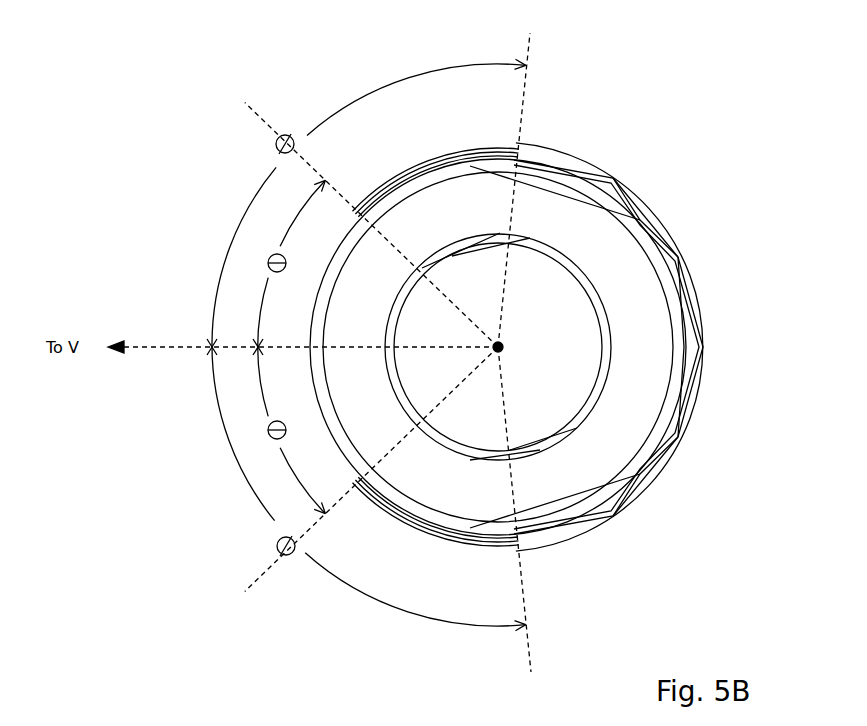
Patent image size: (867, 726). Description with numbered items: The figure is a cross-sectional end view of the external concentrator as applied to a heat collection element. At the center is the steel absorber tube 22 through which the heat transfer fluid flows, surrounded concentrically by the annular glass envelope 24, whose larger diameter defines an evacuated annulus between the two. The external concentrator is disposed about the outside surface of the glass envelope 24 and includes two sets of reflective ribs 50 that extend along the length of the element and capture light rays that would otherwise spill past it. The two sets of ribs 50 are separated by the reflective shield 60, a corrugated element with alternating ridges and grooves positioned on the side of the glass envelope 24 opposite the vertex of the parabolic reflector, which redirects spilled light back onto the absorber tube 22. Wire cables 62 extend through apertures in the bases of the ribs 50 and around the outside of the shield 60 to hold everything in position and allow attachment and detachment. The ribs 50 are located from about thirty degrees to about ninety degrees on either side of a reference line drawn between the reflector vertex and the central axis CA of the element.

The absorber tube 22 is at (607, 322).
The glass envelope 24 is at (680, 257).
The reflective ribs 50 is at (481, 134).
The reflective shield 60 is at (702, 362).
The wire cables 62 is at (573, 160).
The central axis CA is at (505, 342).